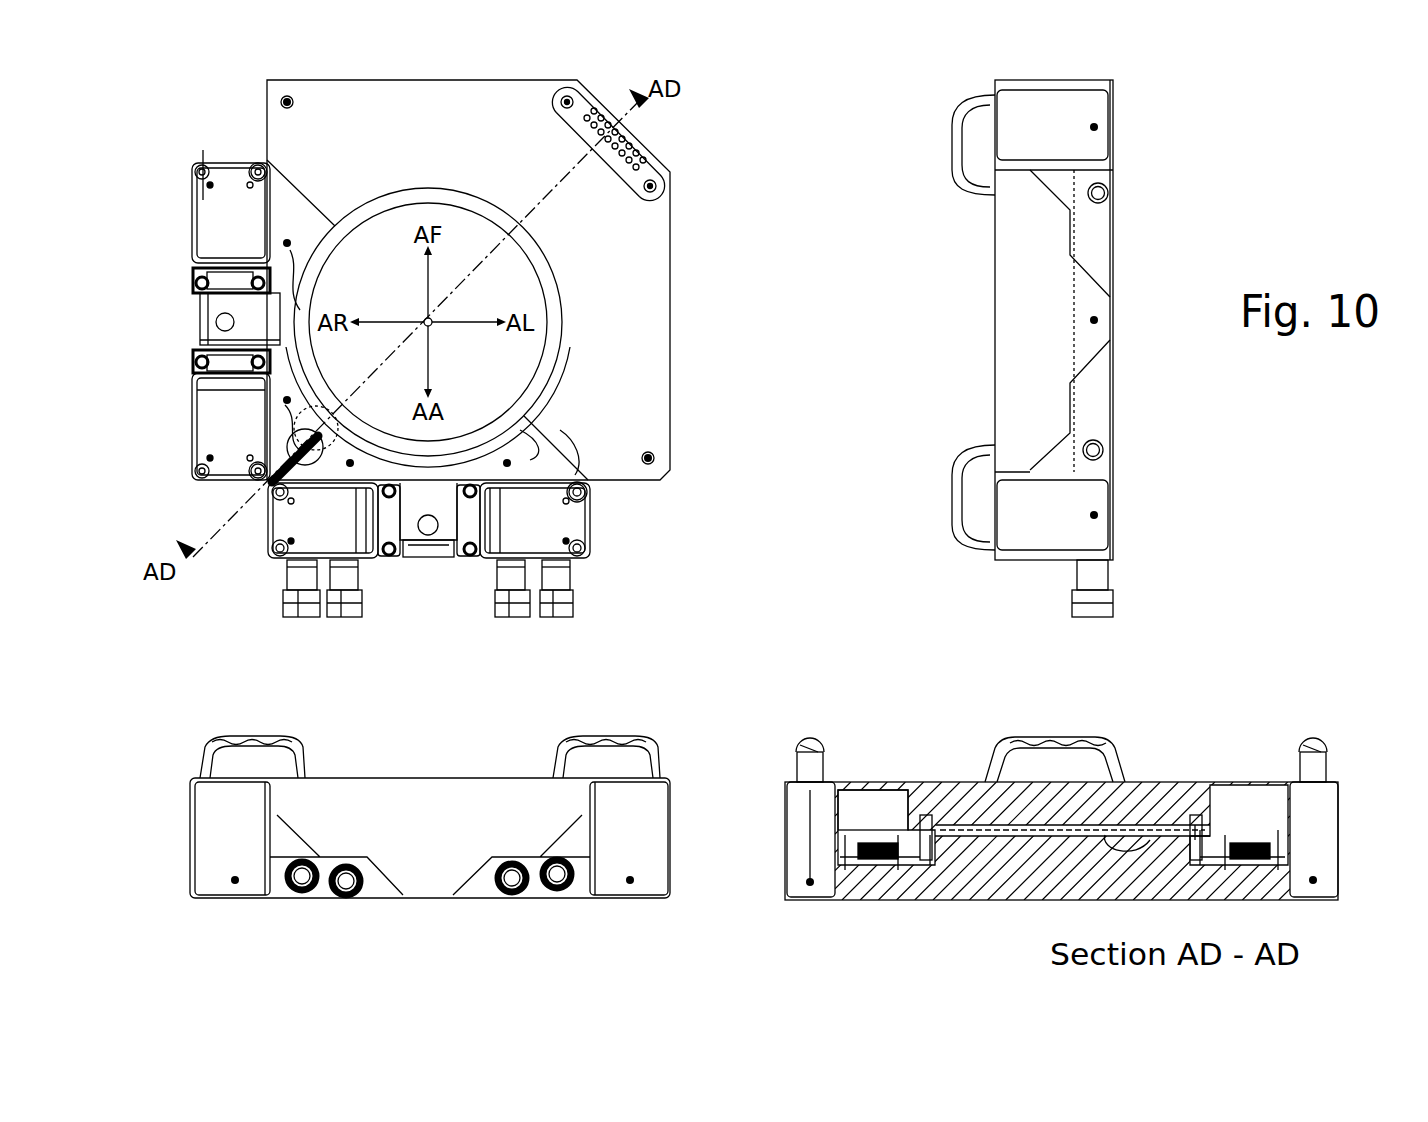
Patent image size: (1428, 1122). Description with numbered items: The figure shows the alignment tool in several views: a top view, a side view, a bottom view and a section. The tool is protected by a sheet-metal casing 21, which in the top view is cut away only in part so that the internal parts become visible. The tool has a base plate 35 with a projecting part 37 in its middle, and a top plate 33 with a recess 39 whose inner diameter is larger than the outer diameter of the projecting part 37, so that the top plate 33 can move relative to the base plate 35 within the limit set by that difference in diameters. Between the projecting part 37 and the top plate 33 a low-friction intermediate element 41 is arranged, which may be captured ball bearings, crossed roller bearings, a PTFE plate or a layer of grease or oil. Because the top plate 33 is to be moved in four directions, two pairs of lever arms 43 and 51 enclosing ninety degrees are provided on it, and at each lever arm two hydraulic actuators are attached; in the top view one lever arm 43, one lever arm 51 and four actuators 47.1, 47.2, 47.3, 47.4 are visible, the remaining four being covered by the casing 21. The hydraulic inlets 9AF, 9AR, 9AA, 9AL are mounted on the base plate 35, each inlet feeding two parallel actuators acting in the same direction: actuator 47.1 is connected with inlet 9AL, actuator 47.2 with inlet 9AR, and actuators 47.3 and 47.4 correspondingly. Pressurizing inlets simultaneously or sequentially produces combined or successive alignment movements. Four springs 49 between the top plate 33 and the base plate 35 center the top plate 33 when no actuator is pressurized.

The casing 21 is at (633, 252).
The top plate 33 is at (382, 240).
The base plate 35 is at (1093, 236).
The projecting part 37 is at (965, 858).
The recess 39 is at (1120, 835).
The low-friction intermediate element 41 is at (1012, 840).
The lever arm 43 is at (205, 316).
The hydraulic actuator 47.1 is at (270, 523).
The hydraulic actuator 47.2 is at (540, 530).
The hydraulic actuator 47.3 is at (233, 428).
The hydraulic actuator 47.4 is at (232, 232).
The spring 49 is at (290, 195).
The lever arm 51 is at (437, 535).
The hydraulic inlet 9AF is at (290, 888).
The hydraulic inlet 9AR is at (362, 895).
The hydraulic inlet 9AA is at (510, 888).
The hydraulic inlet 9AL is at (565, 892).